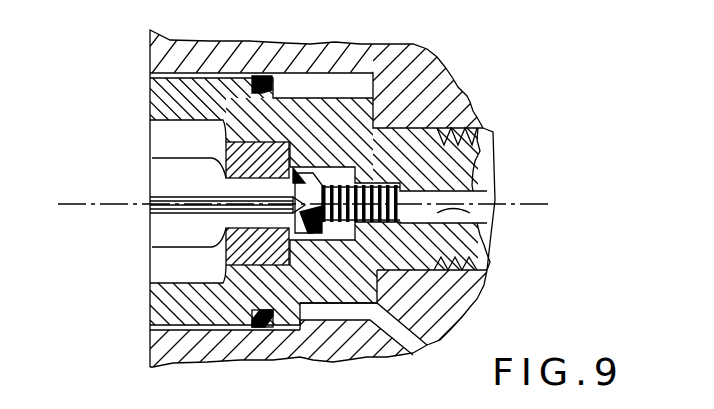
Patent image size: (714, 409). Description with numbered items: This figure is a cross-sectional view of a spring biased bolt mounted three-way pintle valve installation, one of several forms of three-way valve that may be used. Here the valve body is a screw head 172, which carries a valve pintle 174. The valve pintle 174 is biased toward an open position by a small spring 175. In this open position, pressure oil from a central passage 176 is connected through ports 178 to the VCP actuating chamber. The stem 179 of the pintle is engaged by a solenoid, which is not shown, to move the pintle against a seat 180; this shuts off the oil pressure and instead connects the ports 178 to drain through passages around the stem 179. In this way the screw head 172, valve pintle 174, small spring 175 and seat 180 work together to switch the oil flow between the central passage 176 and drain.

The screw head 172 is at (163, 100).
The valve pintle 174 is at (262, 266).
The small spring 175 is at (393, 173).
The central passage 176 is at (488, 220).
The ports 178 is at (338, 262).
The stem 179 is at (210, 198).
The seat 180 is at (340, 166).